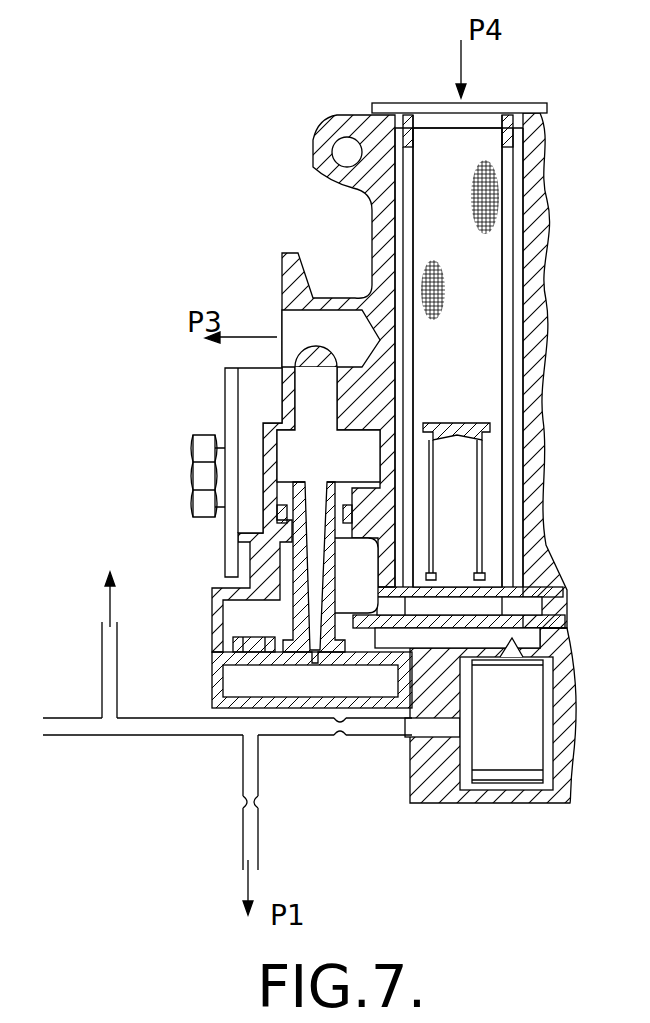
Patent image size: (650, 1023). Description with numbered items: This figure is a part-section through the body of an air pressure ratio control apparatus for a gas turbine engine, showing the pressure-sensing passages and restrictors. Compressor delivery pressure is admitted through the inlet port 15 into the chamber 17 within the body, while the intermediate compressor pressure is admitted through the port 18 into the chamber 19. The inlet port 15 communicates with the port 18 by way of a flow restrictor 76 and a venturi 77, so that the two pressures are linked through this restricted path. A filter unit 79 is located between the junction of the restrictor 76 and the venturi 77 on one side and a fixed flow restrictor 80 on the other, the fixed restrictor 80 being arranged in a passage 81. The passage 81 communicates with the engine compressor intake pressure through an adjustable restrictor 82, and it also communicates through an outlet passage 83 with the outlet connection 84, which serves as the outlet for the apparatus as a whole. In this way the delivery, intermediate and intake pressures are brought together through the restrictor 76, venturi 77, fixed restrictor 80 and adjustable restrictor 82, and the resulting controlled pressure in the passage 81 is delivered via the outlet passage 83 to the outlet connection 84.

The port 15 is at (487, 97).
The chamber 17 is at (513, 202).
The port 18 is at (295, 330).
The chamber 19 is at (297, 452).
The flow restrictor 76 is at (257, 665).
The venturi 77 is at (315, 665).
The filter unit 79 is at (523, 738).
The fixed flow restrictor 80 is at (342, 732).
The passage 81 is at (128, 730).
The adjustable restrictor 82 is at (258, 803).
The outlet passage 83 is at (112, 672).
The outlet connection 84 is at (112, 635).